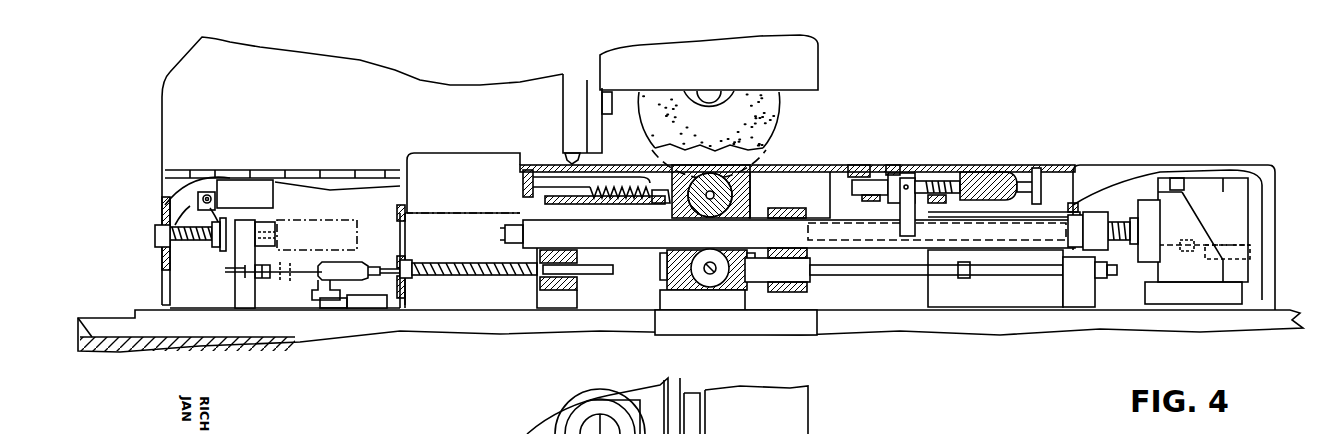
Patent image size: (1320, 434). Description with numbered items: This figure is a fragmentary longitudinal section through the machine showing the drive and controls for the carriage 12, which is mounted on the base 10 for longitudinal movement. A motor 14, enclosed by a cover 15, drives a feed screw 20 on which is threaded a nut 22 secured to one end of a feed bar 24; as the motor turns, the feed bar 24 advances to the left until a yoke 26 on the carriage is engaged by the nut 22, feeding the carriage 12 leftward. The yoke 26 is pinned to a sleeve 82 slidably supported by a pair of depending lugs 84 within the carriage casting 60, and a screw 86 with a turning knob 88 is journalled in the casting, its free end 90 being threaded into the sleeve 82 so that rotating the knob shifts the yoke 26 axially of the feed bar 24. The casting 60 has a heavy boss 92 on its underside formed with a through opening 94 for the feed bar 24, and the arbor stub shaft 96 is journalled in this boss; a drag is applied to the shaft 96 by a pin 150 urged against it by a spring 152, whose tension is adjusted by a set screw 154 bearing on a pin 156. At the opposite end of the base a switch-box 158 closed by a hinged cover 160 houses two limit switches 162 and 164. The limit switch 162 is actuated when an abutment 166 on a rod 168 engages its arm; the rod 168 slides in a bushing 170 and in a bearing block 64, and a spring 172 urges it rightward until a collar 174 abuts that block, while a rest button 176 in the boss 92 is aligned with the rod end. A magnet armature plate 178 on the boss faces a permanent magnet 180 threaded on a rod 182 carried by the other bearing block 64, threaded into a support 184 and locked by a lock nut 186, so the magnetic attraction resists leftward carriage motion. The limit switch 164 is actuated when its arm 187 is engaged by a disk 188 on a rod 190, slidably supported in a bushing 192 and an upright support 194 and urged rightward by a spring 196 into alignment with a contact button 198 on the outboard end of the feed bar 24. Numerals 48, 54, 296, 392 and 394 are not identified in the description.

The base 10 is at (1090, 322).
The carriage 12 is at (905, 160).
The motor 14 is at (1212, 187).
The cover 15 is at (1147, 168).
The feed screw 20 is at (1115, 224).
The nut 22 is at (1103, 202).
The feed bar 24 is at (802, 228).
The yoke 26 is at (910, 177).
The housing 48 is at (810, 432).
The grinding wheel 54 is at (768, 114).
The carriage casting 60 is at (834, 167).
The bearing block 64 is at (580, 256).
The sleeve 82 is at (860, 180).
The depending lugs 84 is at (867, 173).
The screw 86 is at (1012, 168).
The turning knob 88 is at (1042, 178).
The free end 90 is at (968, 173).
The heavy boss 92 is at (748, 203).
The through opening 94 is at (667, 255).
The stub shaft 96 is at (722, 186).
The pin 150 is at (668, 196).
The spring 152 is at (610, 196).
The set screw 154 is at (515, 200).
The pin 156 is at (554, 197).
The switch-box 158 is at (326, 196).
The hinged cover 160 is at (366, 186).
The limit switch 162 is at (381, 292).
The limit switch 164 is at (258, 188).
The abutment 166 is at (345, 263).
The rod 168 is at (432, 263).
The bushing 170 is at (406, 262).
The spring 172 is at (466, 291).
The collar 174 is at (540, 283).
The rest button 176 is at (702, 297).
The magnet armature plate 178 is at (752, 292).
The permanent magnet 180 is at (813, 282).
The rod 182 is at (968, 266).
The support 184 is at (1088, 292).
The lock nut 186 is at (1100, 276).
The arm 187 is at (221, 192).
The disk 188 is at (218, 242).
The rod 190 is at (158, 238).
The bushing 192 is at (158, 228).
The upright support 194 is at (245, 287).
The spring 196 is at (180, 222).
The contact button 198 is at (508, 227).
The bracket 296 is at (697, 418).
The hidden housing 392 is at (312, 256).
The nut 394 is at (268, 274).